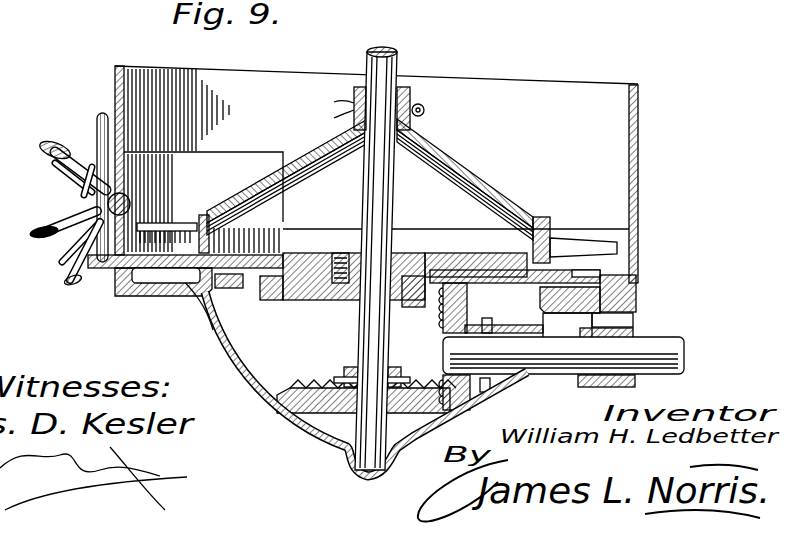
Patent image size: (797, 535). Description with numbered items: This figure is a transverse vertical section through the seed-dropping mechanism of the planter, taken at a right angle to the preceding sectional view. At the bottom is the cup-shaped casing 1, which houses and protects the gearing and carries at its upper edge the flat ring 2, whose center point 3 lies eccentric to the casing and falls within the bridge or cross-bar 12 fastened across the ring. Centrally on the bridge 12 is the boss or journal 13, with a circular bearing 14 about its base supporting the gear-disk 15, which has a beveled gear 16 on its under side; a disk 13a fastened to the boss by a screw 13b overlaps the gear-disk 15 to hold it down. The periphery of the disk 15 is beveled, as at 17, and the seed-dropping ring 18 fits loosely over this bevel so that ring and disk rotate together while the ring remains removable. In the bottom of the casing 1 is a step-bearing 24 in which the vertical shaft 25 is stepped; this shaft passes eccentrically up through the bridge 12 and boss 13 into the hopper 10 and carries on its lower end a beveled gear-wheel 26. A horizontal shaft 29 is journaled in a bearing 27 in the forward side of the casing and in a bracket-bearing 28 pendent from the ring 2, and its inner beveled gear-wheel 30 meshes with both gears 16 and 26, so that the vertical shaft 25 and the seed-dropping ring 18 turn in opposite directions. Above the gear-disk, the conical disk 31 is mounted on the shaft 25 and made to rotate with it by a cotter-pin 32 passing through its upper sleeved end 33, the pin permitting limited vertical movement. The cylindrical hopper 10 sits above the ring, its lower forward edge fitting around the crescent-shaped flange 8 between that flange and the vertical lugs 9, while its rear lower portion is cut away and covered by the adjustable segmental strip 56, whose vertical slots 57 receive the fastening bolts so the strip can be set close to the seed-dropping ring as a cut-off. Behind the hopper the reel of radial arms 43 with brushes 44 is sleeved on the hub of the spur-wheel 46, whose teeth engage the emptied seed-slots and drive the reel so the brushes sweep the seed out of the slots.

The casing 1 is at (480, 424).
The flat ring 2 is at (638, 304).
The center point 3 is at (342, 296).
The crescent-shaped flange 8 is at (638, 282).
The vertical lugs 9 is at (638, 292).
The hopper 10 is at (638, 188).
The bridge or cross-bar 12 is at (310, 300).
The boss or journal 13 is at (340, 254).
The disk 13a is at (290, 255).
The screw 13b is at (310, 200).
The circular bearing 14 is at (276, 300).
The disk 15 is at (473, 268).
The beveled gear 16 is at (228, 288).
The beveled periphery 17 is at (520, 241).
The seed-dropping ring 18 is at (145, 258).
The step-bearing 24 is at (372, 476).
The vertical shaft 25 is at (374, 207).
The beveled gear-wheel 26 is at (323, 386).
The bearing 27 is at (522, 377).
The bracket-bearing 28 is at (603, 387).
The horizontal shaft 29 is at (563, 355).
The beveled gear-wheel 30 is at (467, 306).
The conical disk 31 is at (488, 190).
The cotter-pin 32 is at (436, 111).
The sleeved end 33 is at (354, 97).
The radial arms 43 is at (55, 170).
The brush 44 is at (55, 143).
The spur-wheel 46 is at (97, 212).
The segmental strip 56 is at (203, 187).
The vertical slots 57 is at (131, 212).